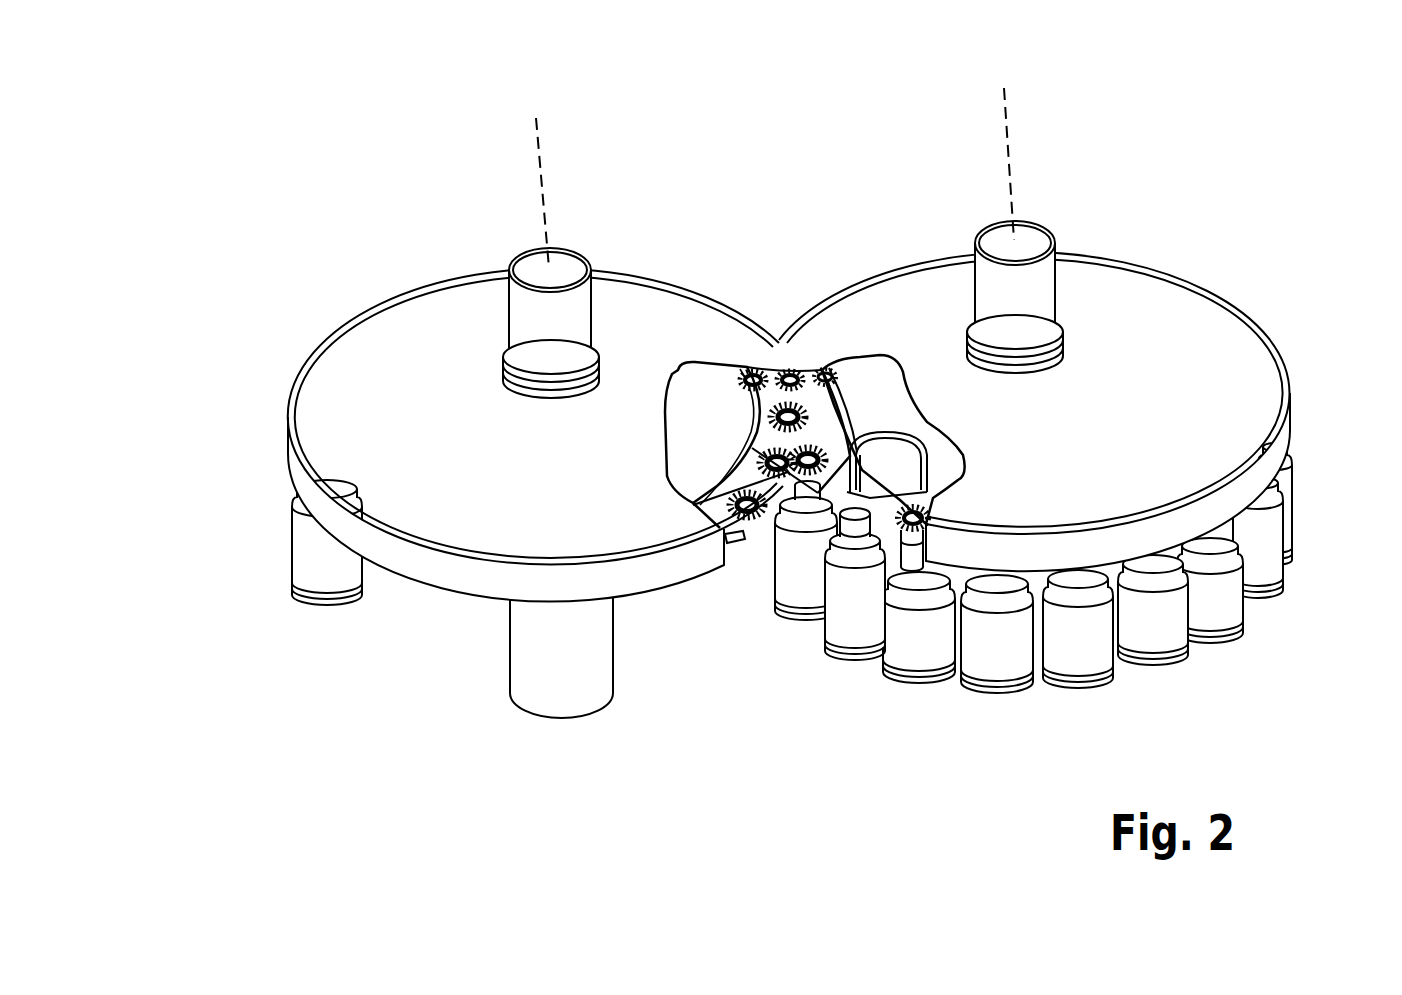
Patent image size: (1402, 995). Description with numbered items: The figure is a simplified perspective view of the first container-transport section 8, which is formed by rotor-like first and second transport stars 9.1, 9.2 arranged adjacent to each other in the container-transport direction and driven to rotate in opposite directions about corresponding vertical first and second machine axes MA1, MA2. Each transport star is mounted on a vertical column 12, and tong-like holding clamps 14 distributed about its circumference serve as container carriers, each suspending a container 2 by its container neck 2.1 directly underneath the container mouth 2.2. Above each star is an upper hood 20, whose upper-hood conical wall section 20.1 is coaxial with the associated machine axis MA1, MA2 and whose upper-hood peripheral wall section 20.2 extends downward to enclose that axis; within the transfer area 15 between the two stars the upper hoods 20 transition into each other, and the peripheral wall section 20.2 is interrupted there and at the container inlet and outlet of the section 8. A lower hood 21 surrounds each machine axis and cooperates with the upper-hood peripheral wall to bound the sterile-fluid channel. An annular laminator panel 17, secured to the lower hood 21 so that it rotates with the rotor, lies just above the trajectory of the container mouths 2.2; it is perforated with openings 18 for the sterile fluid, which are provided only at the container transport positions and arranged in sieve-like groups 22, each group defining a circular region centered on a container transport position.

The first container-transport section 8 is at (816, 148).
The first transport star 9.1 is at (384, 213).
The second transport star 9.2 is at (1206, 242).
The first machine axis MA1 is at (577, 193).
The second machine axis MA2 is at (1048, 164).
The upper hood 20 is at (375, 313).
The upper-hood conical wall section 20.1 is at (358, 387).
The upper-hood peripheral wall section 20.2 is at (287, 473).
The container 2 is at (302, 565).
The container neck 2.1 is at (857, 523).
The container mouth 2.2 is at (868, 506).
The vertical column 12 is at (552, 648).
The holding clamp 14 is at (737, 547).
The transfer area 15 is at (772, 292).
The laminator panel 17 is at (760, 478).
The openings 18 is at (795, 403).
The lower hood 21 is at (693, 381).
The group of openings 22 is at (766, 387).